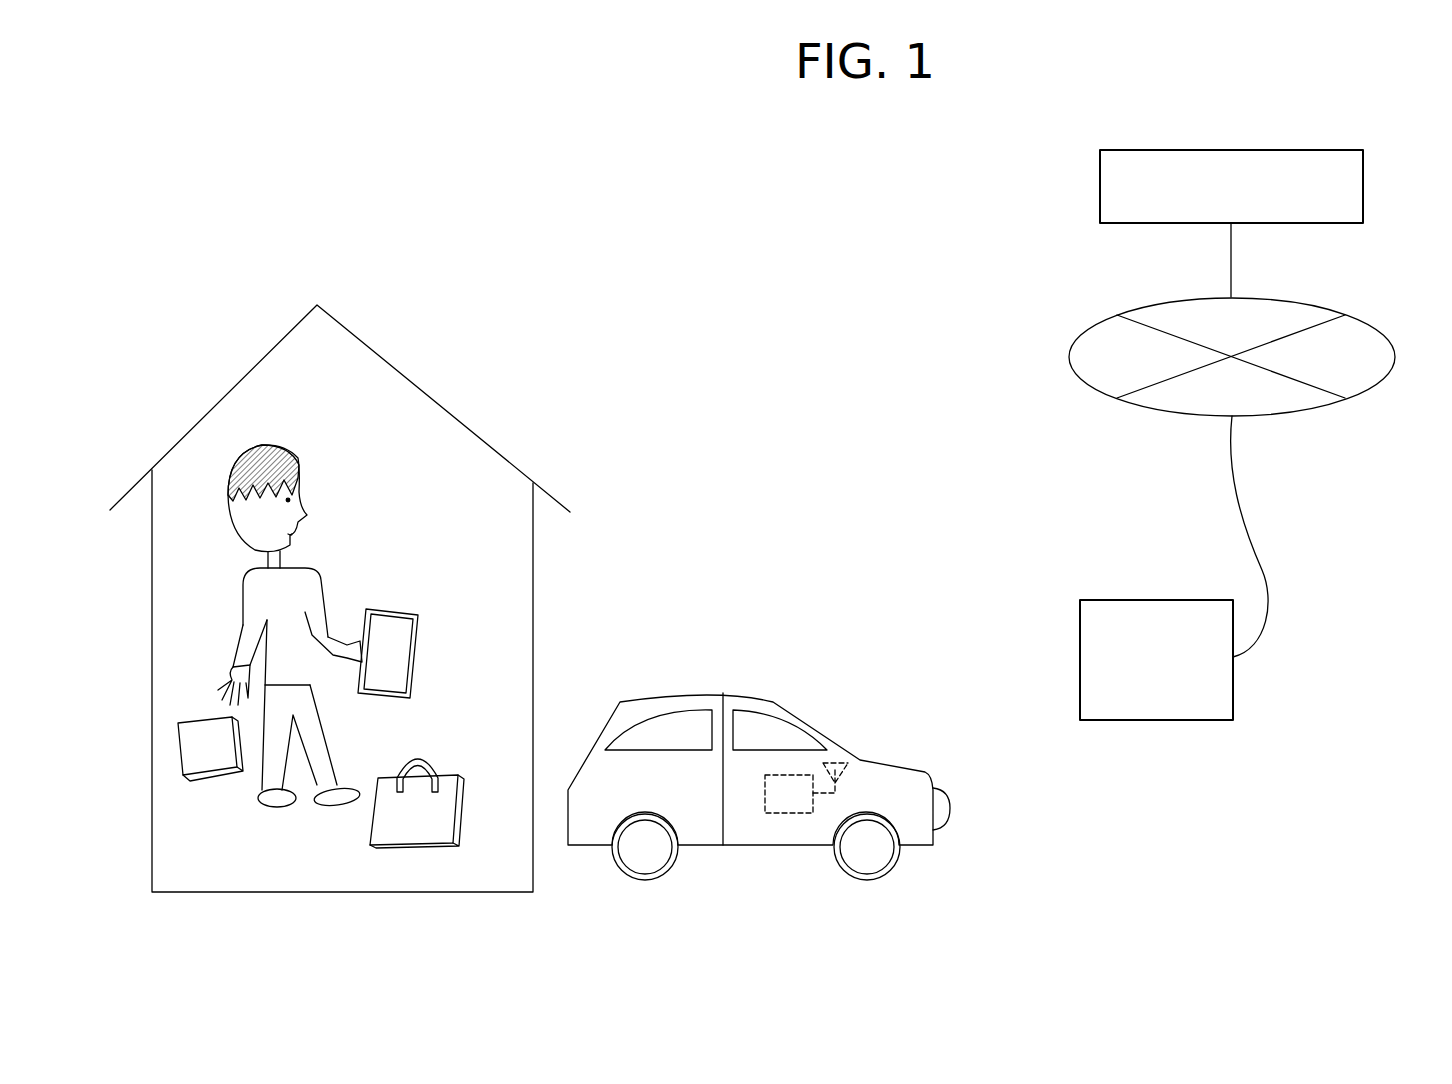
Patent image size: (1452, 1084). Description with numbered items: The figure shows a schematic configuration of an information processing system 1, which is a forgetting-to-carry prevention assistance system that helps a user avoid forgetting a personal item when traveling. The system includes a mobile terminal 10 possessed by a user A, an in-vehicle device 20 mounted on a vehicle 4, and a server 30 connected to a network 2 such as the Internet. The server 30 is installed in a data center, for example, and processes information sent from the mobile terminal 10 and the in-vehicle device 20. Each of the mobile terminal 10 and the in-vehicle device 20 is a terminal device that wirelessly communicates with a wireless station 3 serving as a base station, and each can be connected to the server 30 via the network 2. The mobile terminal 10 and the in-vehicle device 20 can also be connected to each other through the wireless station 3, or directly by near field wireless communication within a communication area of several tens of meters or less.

The information processing system 1 is at (824, 959).
The network 2 is at (1365, 320).
The wireless station 3 is at (1158, 720).
The vehicle 4 is at (640, 700).
The mobile terminal 10 is at (390, 607).
The in-vehicle device 20 is at (765, 793).
The server 30 is at (1302, 148).
The user A is at (241, 593).